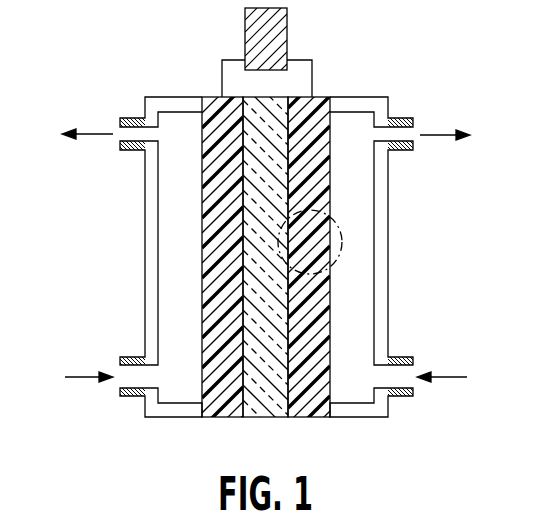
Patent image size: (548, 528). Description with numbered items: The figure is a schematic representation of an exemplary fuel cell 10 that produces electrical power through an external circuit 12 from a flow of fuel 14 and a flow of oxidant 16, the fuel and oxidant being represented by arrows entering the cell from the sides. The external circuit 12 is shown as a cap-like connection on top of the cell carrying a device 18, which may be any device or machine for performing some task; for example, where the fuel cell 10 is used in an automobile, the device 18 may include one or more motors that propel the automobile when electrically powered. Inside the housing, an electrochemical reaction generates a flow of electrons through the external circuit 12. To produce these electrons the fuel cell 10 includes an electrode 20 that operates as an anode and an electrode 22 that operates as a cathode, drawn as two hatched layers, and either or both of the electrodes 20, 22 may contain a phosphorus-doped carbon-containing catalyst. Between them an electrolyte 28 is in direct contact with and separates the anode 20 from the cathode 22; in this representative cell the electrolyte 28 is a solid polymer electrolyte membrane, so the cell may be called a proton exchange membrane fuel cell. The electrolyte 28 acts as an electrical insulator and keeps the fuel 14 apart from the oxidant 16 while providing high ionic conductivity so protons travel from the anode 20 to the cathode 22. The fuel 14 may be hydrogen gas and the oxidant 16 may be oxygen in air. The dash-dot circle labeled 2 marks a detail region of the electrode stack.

The fuel cell 10 is at (399, 68).
The external circuit 12 is at (312, 62).
The flow of fuel 14 is at (75, 378).
The flow of oxidant 16 is at (445, 378).
The device 18 is at (245, 26).
The electrode 20 is at (217, 418).
The electrode 22 is at (312, 418).
The electrolyte 28 is at (263, 418).
The detail region 2 is at (338, 231).